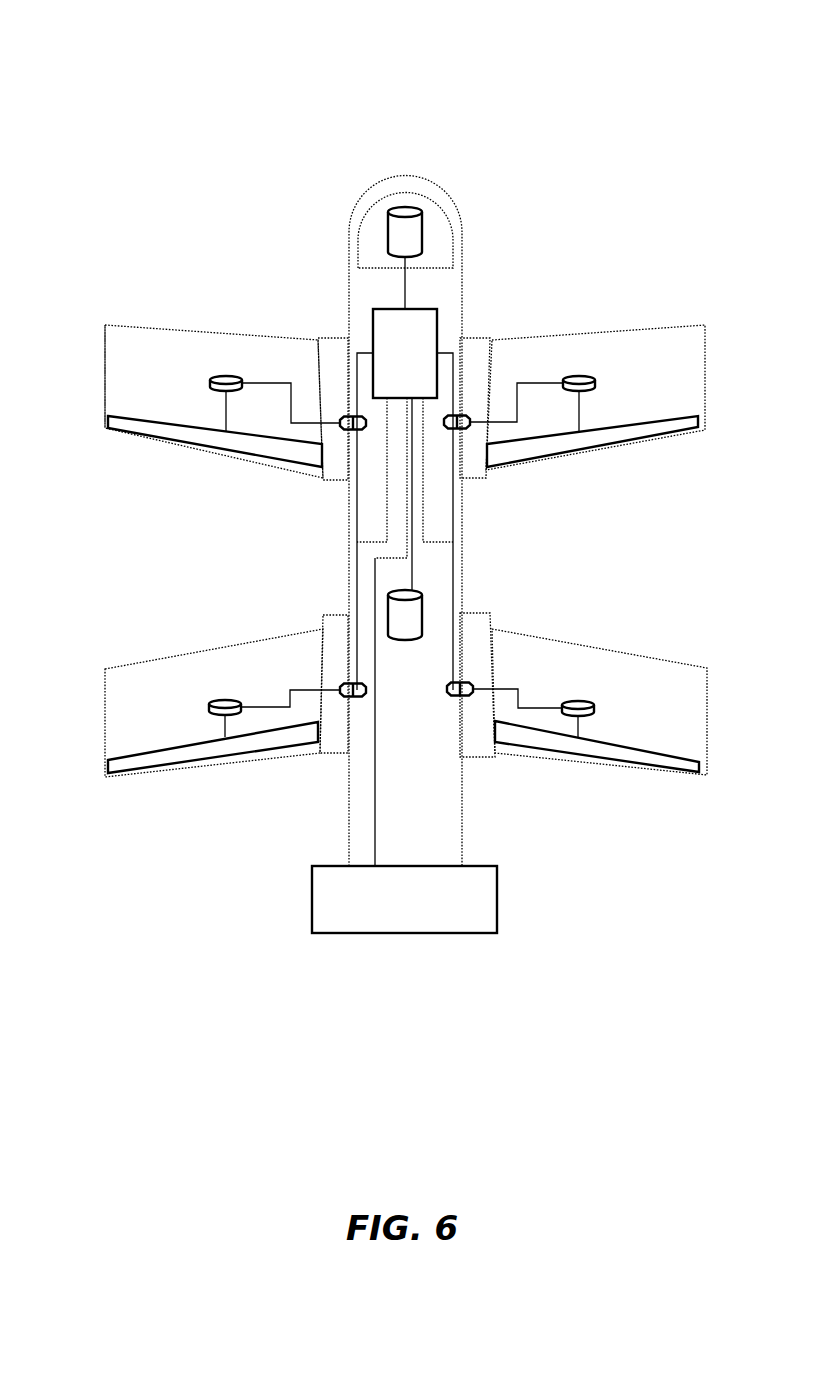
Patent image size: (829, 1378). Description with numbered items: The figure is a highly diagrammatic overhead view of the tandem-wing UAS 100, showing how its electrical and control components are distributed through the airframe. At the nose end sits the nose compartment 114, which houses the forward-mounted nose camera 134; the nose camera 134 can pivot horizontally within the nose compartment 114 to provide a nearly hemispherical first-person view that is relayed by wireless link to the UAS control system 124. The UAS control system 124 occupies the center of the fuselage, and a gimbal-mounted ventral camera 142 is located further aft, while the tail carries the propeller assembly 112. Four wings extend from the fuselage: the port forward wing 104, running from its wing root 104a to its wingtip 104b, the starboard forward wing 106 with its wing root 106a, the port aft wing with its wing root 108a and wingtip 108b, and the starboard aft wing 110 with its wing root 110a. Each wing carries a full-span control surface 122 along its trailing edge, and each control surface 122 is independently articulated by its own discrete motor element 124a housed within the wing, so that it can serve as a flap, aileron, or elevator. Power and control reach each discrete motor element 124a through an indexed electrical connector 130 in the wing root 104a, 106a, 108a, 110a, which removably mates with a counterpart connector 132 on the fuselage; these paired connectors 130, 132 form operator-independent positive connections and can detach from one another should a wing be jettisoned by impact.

The tandem-wing UAS 100 is at (90, 71).
The port forward wing 104 is at (128, 330).
The wing root 104a is at (338, 338).
The wingtip 104b is at (103, 366).
The starboard forward wing 106 is at (686, 331).
The wing root 106a is at (472, 338).
The wing root 108a is at (336, 615).
The wingtip 108b is at (105, 700).
The starboard aft wing 110 is at (645, 662).
The wing root 110a is at (477, 614).
The propeller assembly 112 is at (391, 924).
The nose compartment 114 is at (437, 238).
The control surface 122 is at (170, 432).
The UAS control system 124 is at (391, 380).
The discrete motor element 124a is at (222, 377).
The indexed electrical connector 130 is at (346, 417).
The counterpart connector 132 is at (357, 430).
The nose camera 134 is at (404, 207).
The ventral camera 142 is at (400, 641).